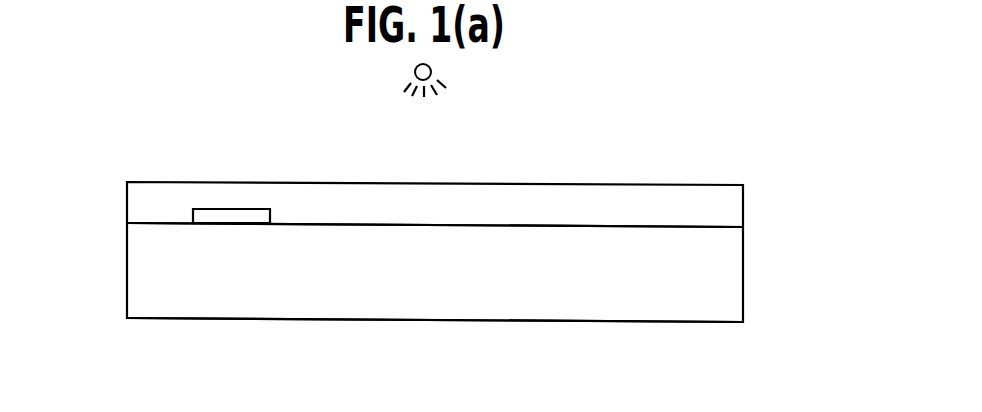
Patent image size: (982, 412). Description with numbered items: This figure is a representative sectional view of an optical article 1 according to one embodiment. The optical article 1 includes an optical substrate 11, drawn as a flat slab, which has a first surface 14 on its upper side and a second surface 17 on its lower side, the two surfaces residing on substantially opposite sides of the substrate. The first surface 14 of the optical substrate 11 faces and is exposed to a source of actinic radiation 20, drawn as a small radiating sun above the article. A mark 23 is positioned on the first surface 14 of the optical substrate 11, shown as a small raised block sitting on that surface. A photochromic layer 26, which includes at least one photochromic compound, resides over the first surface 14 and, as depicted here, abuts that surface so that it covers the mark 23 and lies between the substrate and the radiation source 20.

The optical article 1 is at (82, 352).
The optical substrate 11 is at (731, 284).
The first surface 14 is at (583, 222).
The second surface 17 is at (575, 322).
The source of actinic radiation 20 is at (431, 66).
The mark 23 is at (229, 216).
The photochromic layer 26 is at (732, 203).